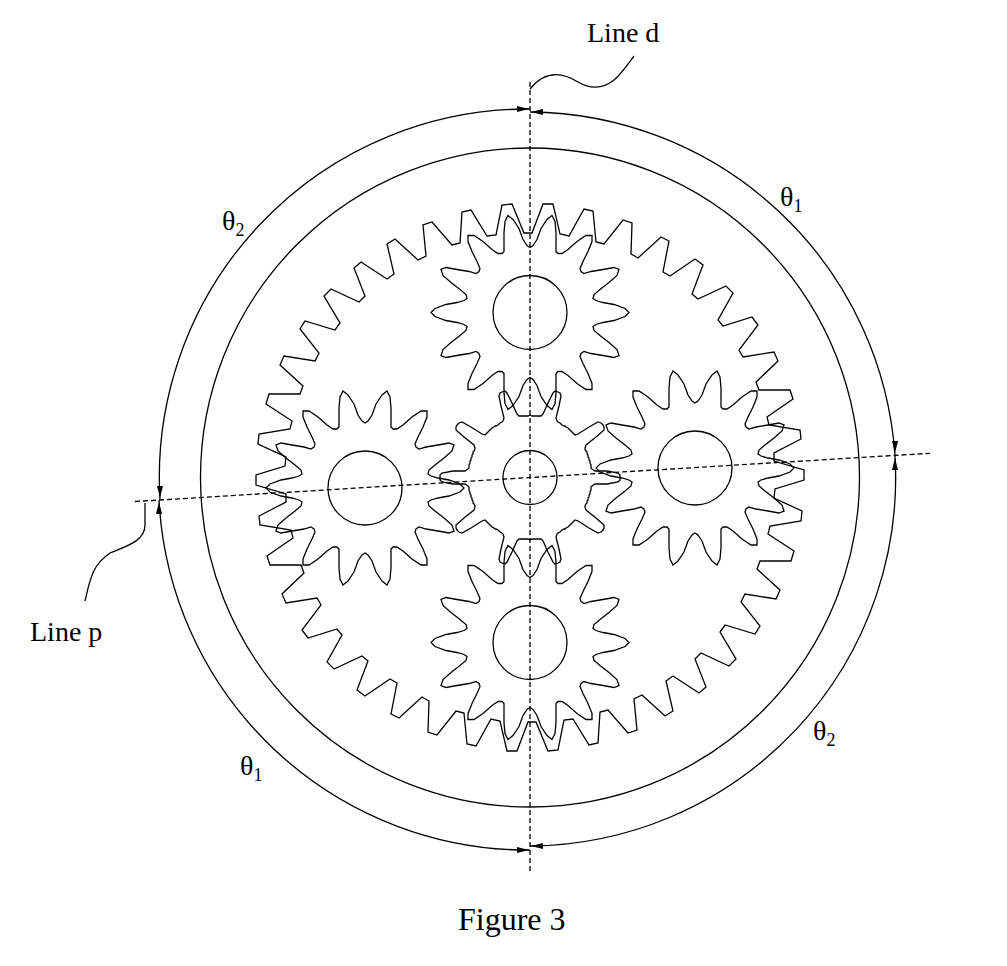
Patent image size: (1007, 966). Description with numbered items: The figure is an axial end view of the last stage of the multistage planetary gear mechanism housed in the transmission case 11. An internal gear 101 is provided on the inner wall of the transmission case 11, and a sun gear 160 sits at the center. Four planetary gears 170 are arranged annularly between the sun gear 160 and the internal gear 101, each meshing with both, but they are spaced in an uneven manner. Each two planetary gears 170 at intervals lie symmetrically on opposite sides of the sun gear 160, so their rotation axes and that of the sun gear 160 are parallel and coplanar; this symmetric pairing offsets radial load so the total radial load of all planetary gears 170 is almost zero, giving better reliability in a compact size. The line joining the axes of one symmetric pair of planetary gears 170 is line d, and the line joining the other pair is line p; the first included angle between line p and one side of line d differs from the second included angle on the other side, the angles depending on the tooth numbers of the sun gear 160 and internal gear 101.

The transmission case 11 is at (222, 432).
The internal gear 101 is at (645, 226).
The sun gear 160 is at (590, 418).
The planetary gears 170 is at (742, 448).